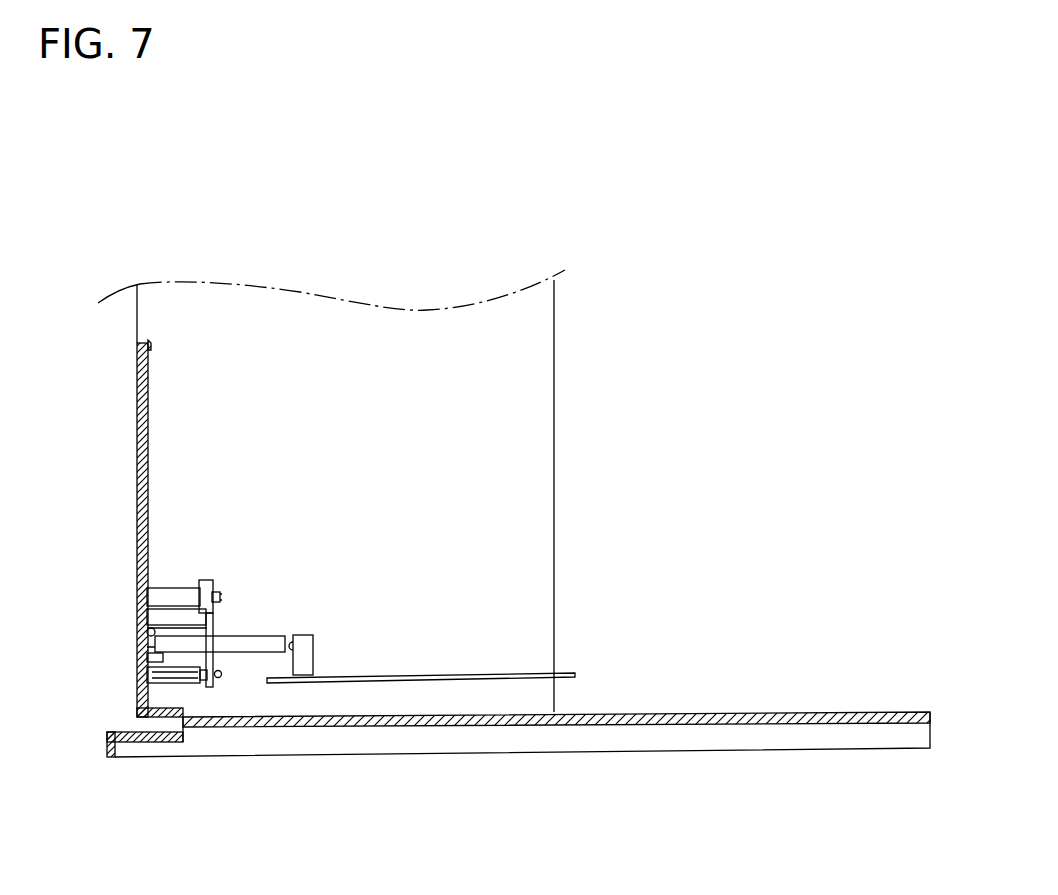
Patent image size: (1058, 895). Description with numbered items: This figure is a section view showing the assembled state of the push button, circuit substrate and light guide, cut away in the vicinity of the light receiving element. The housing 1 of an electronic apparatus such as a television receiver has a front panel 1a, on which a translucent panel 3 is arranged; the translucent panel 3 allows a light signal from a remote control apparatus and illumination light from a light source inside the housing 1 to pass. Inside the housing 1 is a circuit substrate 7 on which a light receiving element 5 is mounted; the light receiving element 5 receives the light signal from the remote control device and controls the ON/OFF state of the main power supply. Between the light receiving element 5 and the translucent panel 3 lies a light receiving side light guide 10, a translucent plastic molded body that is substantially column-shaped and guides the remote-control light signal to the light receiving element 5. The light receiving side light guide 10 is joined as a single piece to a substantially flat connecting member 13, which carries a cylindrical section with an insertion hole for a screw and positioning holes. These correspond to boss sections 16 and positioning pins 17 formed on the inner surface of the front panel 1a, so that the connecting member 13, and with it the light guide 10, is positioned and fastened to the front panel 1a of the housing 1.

The housing 1 is at (118, 381).
The front panel 1a is at (138, 455).
The translucent panel 3 is at (139, 648).
The light receiving element 5 is at (316, 664).
The circuit substrate 7 is at (541, 678).
The light receiving side light guide 10 is at (240, 644).
The connecting member 13 is at (204, 623).
The boss section 16 is at (167, 596).
The positioning pin 17 is at (223, 682).